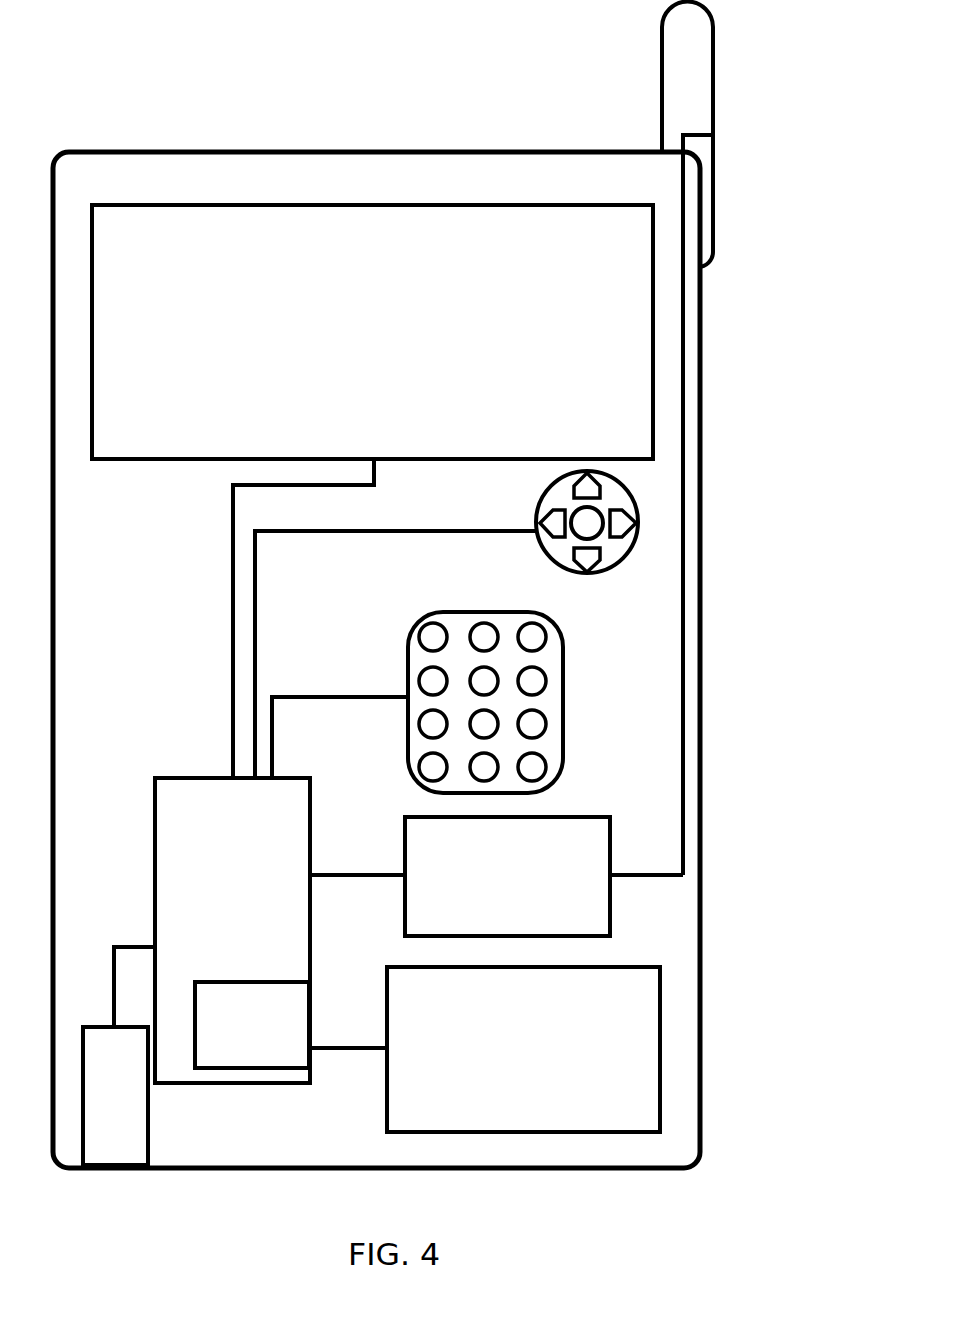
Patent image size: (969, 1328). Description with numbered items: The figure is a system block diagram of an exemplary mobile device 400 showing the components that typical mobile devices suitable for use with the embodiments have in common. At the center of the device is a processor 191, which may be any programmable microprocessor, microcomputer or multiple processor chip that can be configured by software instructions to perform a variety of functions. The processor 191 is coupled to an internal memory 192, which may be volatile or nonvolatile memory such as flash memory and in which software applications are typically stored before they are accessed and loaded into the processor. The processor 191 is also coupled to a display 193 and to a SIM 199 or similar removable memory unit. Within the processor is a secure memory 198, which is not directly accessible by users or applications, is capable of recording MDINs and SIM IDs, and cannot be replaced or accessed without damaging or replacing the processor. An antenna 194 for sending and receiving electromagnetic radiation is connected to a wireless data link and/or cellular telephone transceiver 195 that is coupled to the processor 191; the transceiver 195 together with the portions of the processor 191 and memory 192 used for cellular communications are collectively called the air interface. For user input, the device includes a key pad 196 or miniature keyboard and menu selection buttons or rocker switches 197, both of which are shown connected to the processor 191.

The mobile device 400 is at (330, 152).
The antenna 194 is at (662, 33).
The display 193 is at (375, 334).
The menu selection buttons or rocker switches 197 is at (590, 573).
The key pad 196 is at (563, 697).
The cellular telephone transceiver 195 is at (526, 888).
The internal memory 192 is at (542, 1061).
The processor 191 is at (262, 941).
The secure memory 198 is at (270, 1036).
The SIM 199 is at (134, 1107).